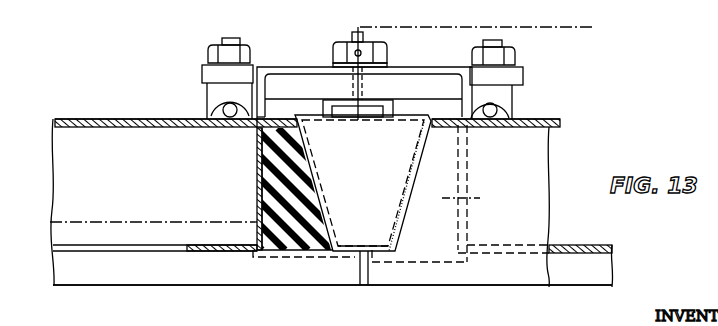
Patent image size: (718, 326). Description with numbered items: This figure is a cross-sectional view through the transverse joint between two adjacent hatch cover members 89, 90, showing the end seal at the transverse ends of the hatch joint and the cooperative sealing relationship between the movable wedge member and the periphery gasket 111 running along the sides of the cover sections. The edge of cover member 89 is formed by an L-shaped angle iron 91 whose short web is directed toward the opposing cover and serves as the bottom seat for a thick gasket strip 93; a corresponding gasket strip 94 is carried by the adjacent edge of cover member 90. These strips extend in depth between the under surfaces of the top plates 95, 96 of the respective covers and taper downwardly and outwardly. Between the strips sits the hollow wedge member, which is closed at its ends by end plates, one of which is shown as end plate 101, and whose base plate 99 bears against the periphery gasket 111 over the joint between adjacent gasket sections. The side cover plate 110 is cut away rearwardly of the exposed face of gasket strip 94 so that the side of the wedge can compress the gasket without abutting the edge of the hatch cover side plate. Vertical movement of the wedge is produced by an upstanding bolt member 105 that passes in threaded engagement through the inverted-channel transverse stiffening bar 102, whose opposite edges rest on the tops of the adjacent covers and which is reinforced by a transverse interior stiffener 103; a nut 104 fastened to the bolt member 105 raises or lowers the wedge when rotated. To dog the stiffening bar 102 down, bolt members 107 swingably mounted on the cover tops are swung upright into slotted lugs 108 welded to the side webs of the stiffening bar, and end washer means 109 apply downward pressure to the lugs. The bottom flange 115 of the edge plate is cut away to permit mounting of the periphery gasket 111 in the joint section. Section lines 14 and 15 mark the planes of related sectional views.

The section line 14- 14 is at (50, 117).
The section line 15- 15 is at (50, 222).
The cover member 89 is at (108, 114).
The cover member 90 is at (568, 125).
The L-shaped angle iron 91 is at (257, 205).
The gasket strip 93 is at (270, 168).
The gasket strip 94 is at (472, 193).
The top plate 95 is at (167, 117).
The top plate 96 is at (533, 119).
The base plate of wedge member 99 is at (377, 245).
The end plate of wedge member 101 is at (370, 180).
The transverse stiffening bar 102 is at (364, 86).
The transverse interior stiffener 103 is at (418, 96).
The nut 104 is at (344, 73).
The bolt member 105 is at (354, 37).
The dogging bolt member 107 is at (230, 38).
The slotted lug 108 is at (202, 73).
The end washer means 109 is at (208, 51).
The side cover plate 110 is at (520, 164).
The periphery gasket 111 is at (268, 277).
The bottom flange of end plate 115 is at (311, 258).